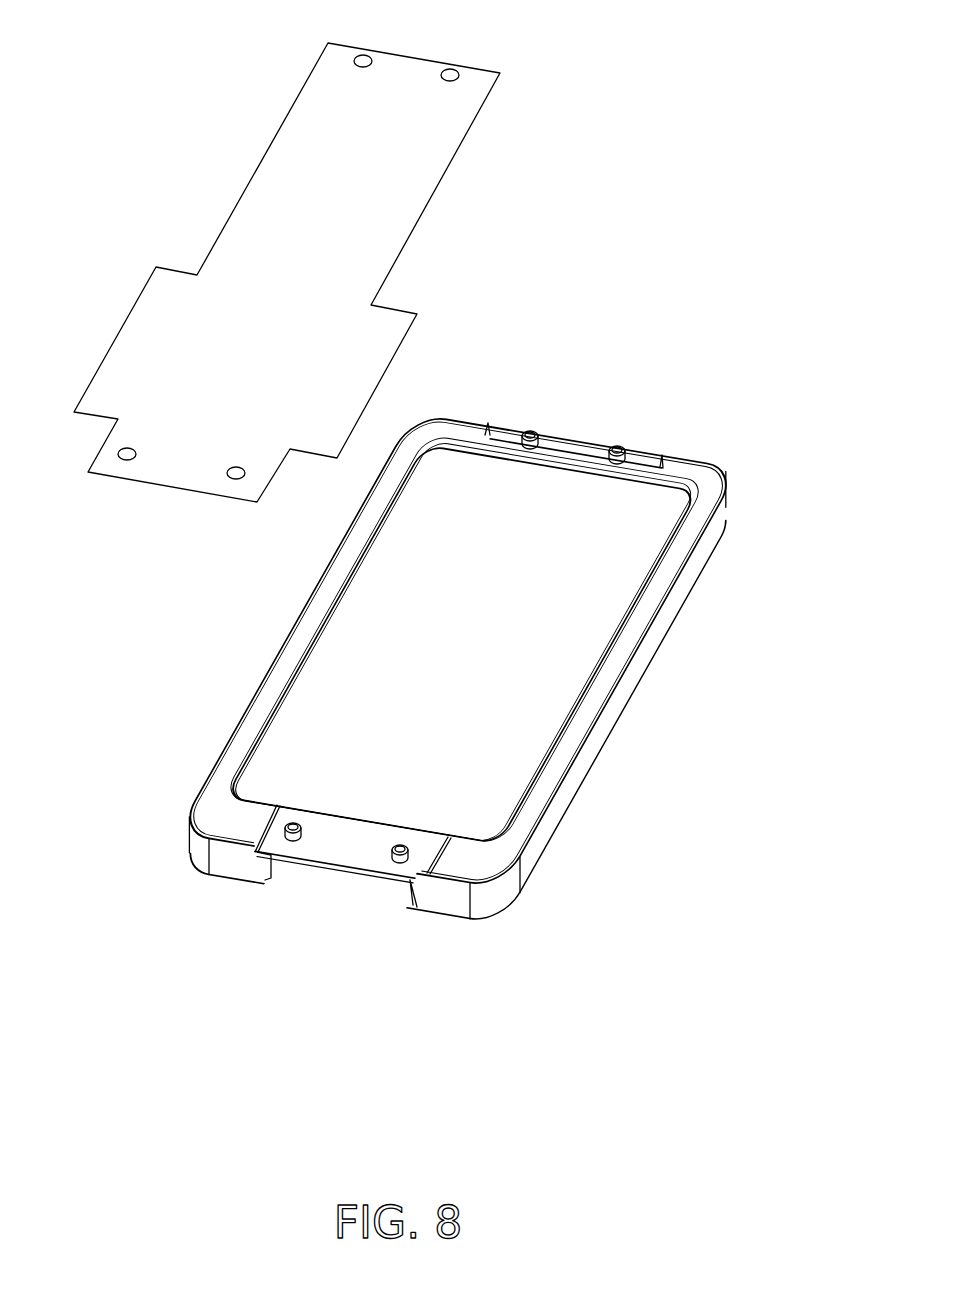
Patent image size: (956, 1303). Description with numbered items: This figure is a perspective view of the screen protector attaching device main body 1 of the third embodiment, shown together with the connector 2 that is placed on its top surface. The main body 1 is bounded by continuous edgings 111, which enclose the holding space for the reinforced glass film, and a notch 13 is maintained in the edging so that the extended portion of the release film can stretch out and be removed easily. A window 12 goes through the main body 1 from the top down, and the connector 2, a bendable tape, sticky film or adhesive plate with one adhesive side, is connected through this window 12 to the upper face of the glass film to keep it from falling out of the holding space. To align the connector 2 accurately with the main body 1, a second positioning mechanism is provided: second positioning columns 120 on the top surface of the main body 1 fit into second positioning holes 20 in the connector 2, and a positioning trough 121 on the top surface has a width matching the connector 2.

The screen protector attaching device main body 1 is at (495, 645).
The connector 2 is at (266, 256).
The second positioning holes 20 is at (362, 56).
The window 12 is at (465, 639).
The second positioning columns 120 is at (527, 430).
The positioning trough 121 is at (598, 453).
The notch 13 is at (316, 873).
The continuous edgings 111 is at (608, 718).